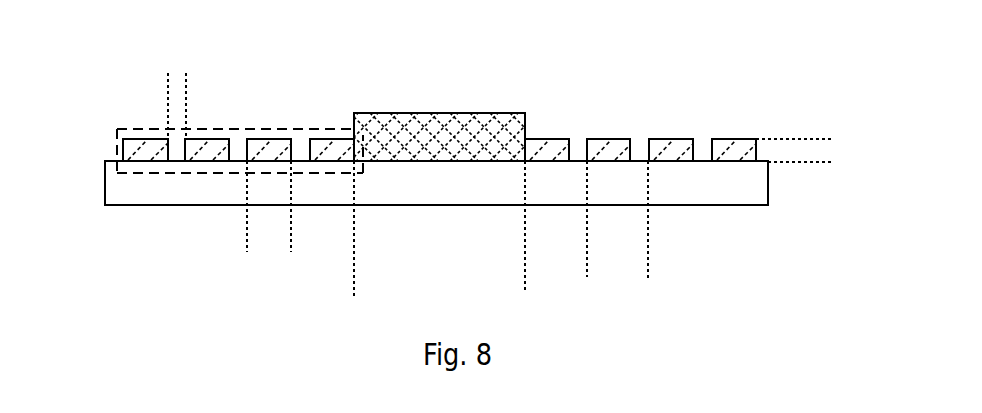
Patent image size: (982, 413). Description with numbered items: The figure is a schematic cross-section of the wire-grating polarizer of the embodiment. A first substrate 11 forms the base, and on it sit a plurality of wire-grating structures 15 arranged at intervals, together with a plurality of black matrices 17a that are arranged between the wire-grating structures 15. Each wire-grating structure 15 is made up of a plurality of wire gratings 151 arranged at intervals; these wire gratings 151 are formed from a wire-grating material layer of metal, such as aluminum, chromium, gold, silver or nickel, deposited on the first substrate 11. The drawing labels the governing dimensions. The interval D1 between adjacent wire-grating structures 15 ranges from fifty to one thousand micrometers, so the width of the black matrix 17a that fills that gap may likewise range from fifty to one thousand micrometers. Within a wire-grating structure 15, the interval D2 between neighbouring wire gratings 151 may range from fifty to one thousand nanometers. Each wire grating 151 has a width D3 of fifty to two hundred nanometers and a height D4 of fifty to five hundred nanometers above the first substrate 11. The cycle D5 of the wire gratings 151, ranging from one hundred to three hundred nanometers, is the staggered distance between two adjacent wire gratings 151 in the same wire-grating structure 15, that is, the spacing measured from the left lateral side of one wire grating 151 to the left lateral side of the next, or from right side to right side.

The first substrate 11 is at (737, 190).
The wire-grating structure 15 is at (256, 89).
The wire grating 151 is at (143, 145).
The black matrix 17a is at (452, 125).
The interval between the wire-grating structures D1 is at (525, 257).
The interval between the wire gratings D2 is at (140, 77).
The width of the wire grating D3 is at (317, 240).
The height of the wire grating D4 is at (805, 103).
The cycle of the wire grating D5 is at (673, 257).